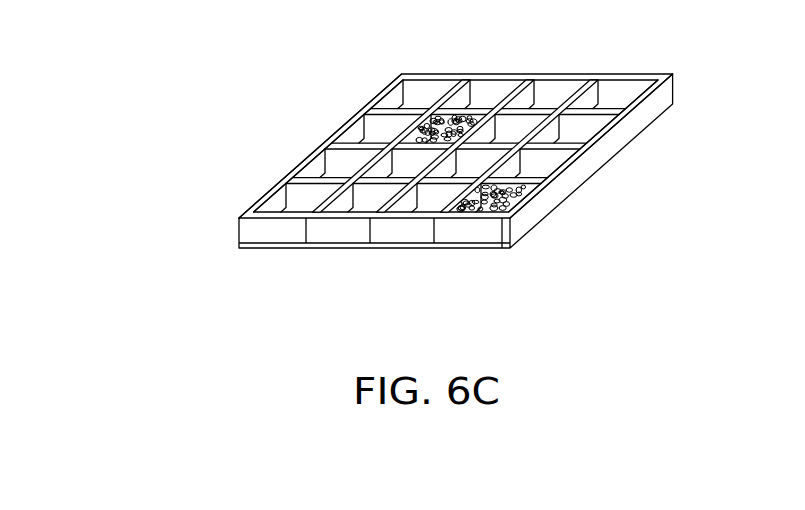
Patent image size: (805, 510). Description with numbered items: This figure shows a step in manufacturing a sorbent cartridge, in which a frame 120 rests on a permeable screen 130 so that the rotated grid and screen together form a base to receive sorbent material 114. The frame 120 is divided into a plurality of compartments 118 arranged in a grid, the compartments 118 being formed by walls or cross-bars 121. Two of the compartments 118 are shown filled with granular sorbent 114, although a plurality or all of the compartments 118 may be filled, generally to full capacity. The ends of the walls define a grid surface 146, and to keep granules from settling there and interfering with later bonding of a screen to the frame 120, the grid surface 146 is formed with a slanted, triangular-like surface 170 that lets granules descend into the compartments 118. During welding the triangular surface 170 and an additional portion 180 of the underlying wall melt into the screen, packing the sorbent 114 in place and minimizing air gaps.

The frame 120 is at (466, 172).
The screen 130 is at (512, 245).
The triangular-like surface 170 is at (355, 115).
The sorbent material 114 is at (558, 197).
The grid surface 146 is at (312, 160).
The compartments 118 is at (543, 162).
The walls/cross-bars 121 is at (429, 208).
The additional portion of underlying wall 180 is at (804, 255).